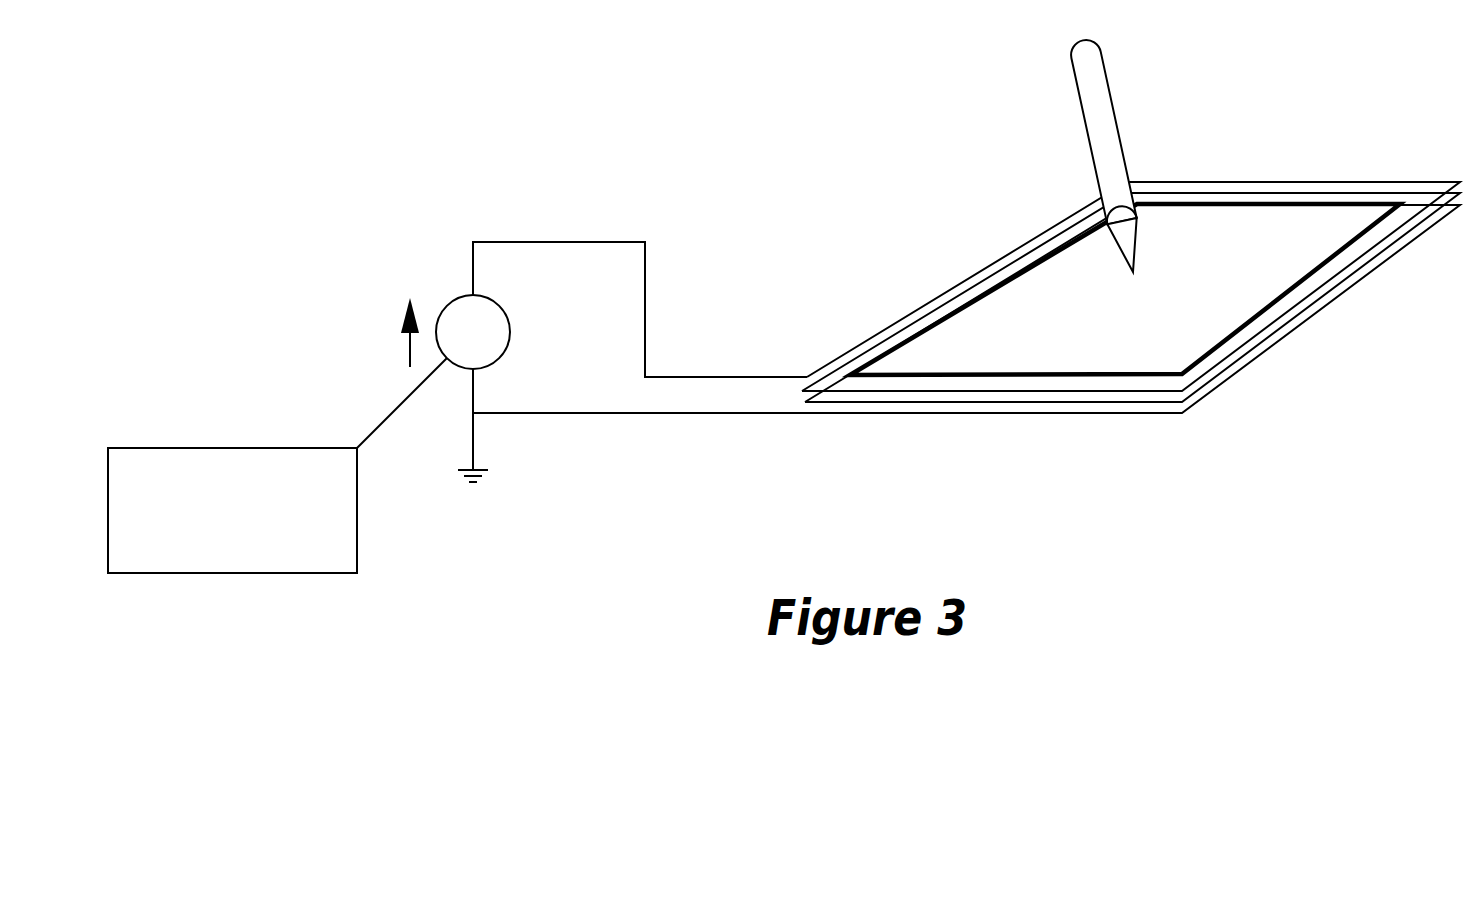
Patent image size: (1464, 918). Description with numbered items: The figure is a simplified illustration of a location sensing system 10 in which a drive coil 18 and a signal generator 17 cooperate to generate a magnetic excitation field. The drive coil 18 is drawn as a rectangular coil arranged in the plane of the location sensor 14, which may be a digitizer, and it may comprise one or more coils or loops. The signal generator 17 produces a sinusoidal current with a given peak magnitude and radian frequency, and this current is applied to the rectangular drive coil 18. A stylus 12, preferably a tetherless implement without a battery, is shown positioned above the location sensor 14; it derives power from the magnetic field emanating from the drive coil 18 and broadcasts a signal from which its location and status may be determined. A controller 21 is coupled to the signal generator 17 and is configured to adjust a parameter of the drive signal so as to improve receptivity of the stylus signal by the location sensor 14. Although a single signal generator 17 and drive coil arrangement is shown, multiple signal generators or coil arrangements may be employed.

The location sensing system 10 is at (772, 137).
The stylus 12 is at (1097, 108).
The location sensor 14 is at (1152, 332).
The signal generator 17 is at (452, 300).
The drive coil 18 is at (933, 298).
The controller 21 is at (195, 447).